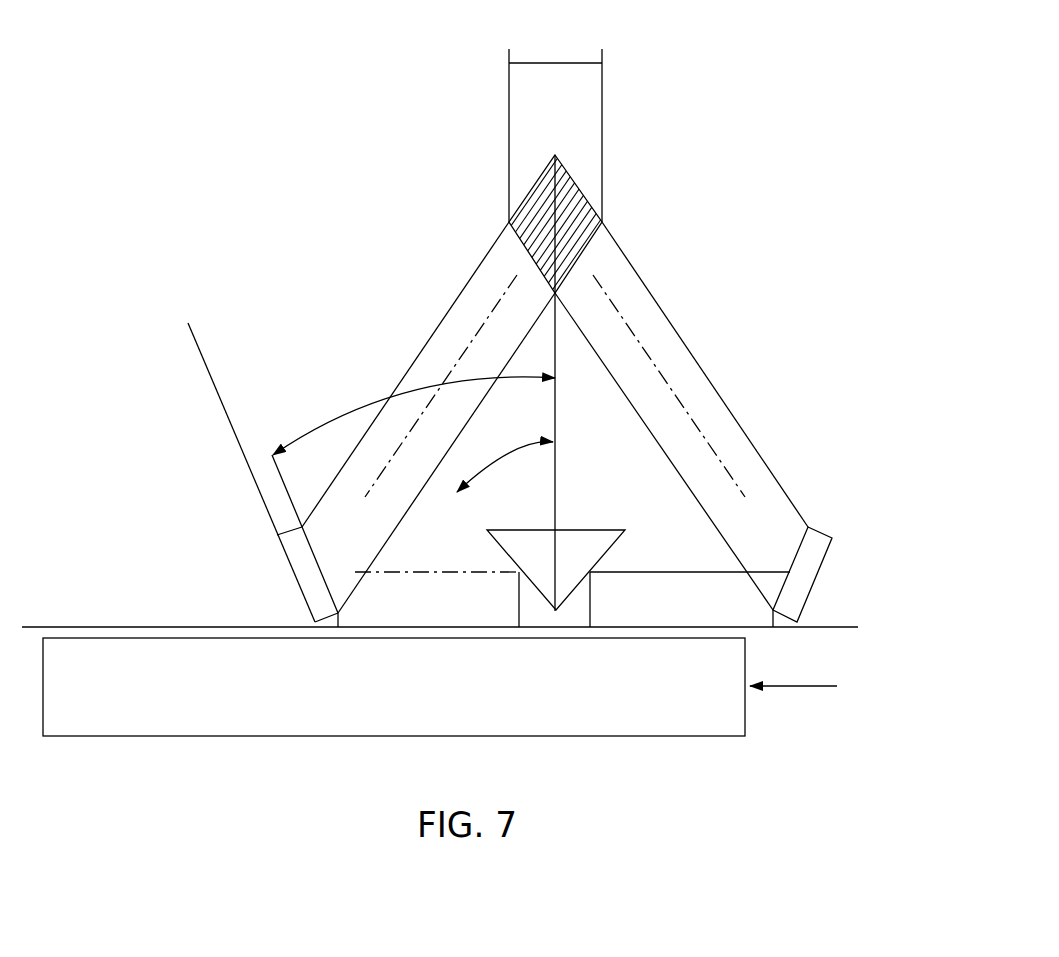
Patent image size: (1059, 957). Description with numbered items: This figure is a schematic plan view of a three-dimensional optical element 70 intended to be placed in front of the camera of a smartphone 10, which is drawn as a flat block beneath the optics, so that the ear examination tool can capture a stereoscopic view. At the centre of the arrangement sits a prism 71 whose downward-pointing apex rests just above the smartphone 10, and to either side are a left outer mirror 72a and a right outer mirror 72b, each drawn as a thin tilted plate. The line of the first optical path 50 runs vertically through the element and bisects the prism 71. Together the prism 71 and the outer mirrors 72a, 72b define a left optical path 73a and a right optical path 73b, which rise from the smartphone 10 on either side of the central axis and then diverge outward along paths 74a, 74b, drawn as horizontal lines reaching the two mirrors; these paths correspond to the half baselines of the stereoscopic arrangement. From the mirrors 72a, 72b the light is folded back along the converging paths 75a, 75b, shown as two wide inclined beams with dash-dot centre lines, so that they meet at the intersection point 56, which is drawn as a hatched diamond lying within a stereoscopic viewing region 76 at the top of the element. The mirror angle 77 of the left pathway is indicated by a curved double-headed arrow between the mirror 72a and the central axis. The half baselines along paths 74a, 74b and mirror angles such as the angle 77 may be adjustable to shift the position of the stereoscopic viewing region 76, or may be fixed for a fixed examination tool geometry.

The smartphone 10 is at (686, 718).
The first optical path 50 is at (558, 418).
The intersection point 56 is at (550, 203).
The 3D optical element 70 is at (290, 208).
The prism 71 is at (537, 540).
The left outer mirror 72a is at (305, 573).
The right outer mirror 72b is at (803, 580).
The left optical path 73a is at (518, 607).
The right optical path 73b is at (593, 612).
The left diverging path 74a is at (420, 570).
The right diverging path 74b is at (688, 570).
The left converging path 75a is at (393, 457).
The right converging path 75b is at (710, 447).
The stereoscopic viewing region 76 is at (603, 222).
The mirror angle 77 is at (317, 428).